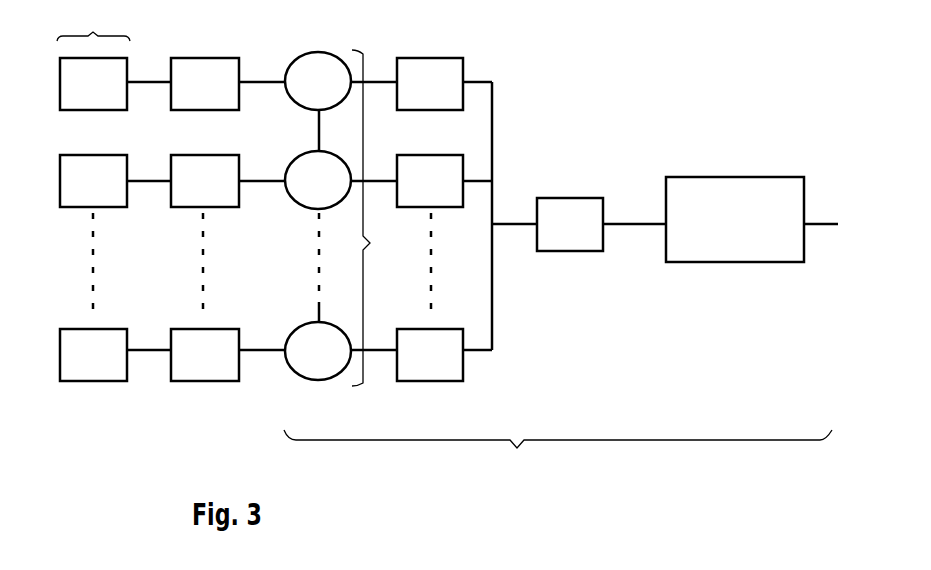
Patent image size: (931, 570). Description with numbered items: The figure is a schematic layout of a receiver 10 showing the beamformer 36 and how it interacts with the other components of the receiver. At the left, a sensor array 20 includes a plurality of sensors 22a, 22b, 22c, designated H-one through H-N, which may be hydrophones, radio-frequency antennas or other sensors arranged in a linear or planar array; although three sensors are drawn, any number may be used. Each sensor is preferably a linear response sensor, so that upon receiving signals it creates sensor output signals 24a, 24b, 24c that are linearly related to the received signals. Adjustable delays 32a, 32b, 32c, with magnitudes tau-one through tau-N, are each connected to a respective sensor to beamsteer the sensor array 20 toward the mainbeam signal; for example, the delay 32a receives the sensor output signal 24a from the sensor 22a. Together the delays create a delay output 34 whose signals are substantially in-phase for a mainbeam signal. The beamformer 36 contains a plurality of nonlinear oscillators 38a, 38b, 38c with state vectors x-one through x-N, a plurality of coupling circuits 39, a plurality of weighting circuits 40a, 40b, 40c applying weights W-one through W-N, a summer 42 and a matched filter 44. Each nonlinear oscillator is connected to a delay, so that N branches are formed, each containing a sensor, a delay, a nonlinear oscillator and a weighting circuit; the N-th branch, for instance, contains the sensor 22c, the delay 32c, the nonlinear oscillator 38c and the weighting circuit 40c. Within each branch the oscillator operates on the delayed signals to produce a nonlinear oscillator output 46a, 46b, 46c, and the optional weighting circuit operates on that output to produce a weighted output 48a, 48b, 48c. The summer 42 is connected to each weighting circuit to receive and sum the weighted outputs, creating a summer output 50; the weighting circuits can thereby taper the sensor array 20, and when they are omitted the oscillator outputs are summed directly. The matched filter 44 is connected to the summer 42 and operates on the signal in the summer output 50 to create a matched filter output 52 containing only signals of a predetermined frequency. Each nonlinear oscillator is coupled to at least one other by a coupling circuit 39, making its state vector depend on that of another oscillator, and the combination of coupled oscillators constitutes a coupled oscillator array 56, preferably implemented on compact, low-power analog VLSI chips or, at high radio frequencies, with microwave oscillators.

The receiver 10 is at (571, 109).
The sensor array 20 is at (93, 24).
The sensor 22a is at (92, 110).
The sensor 22b is at (92, 208).
The sensor 22c is at (92, 382).
The sensor output signal 24a is at (143, 85).
The sensor output signal 24b is at (143, 183).
The sensor output signal 24c is at (150, 352).
The adjustable delay 32a is at (192, 58).
The adjustable delay 32b is at (203, 155).
The adjustable delay 32c is at (205, 383).
The delay output 34 is at (258, 80).
The beamformer 36 is at (558, 456).
The nonlinear oscillator 38a is at (318, 52).
The nonlinear oscillator 38b is at (303, 206).
The nonlinear oscillator 38c is at (326, 380).
The coupling circuit 39 is at (316, 124).
The weighting circuit 40a is at (433, 57).
The weighting circuit 40b is at (433, 155).
The weighting circuit 40c is at (449, 329).
The summer 42 is at (568, 198).
The matched filter 44 is at (730, 177).
The nonlinear oscillator output 46a is at (376, 80).
The nonlinear oscillator output 46b is at (374, 179).
The nonlinear oscillator output 46c is at (379, 348).
The weighted output 48a is at (485, 80).
The weighted output 48b is at (485, 179).
The weighted output 48c is at (477, 353).
The summer output 50 is at (633, 226).
The matched filter output 52 is at (830, 228).
The coupled oscillator array 56 is at (378, 218).